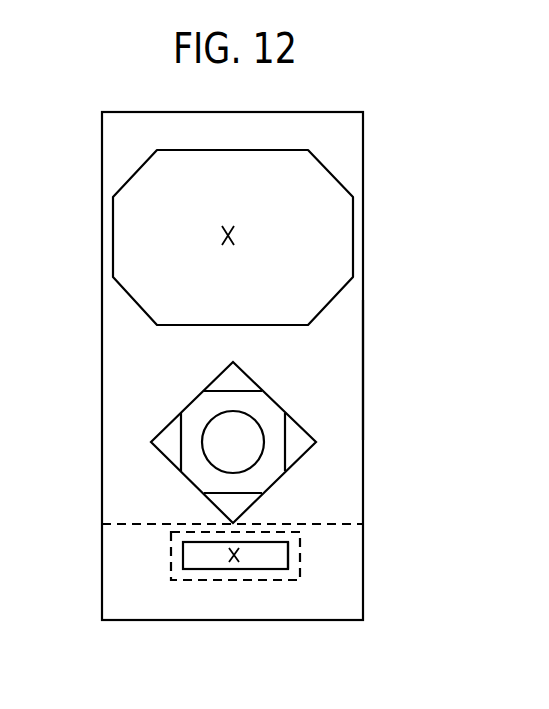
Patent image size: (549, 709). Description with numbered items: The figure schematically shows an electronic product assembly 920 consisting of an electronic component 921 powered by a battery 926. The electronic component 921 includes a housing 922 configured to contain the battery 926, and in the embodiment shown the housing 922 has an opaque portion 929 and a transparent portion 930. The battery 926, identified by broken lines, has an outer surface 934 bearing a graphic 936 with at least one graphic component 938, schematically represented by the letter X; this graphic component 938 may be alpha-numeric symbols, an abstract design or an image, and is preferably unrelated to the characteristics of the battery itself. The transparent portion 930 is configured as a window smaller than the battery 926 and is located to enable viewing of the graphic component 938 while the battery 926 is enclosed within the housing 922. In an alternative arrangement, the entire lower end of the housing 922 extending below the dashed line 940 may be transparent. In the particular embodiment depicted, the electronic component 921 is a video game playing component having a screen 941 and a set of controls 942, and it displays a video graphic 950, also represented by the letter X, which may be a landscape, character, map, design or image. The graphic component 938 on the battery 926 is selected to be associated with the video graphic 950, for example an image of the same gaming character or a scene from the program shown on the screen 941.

The electronic product assembly 920 is at (98, 84).
The electronic component 921 is at (373, 126).
The housing 922 is at (363, 372).
The battery 926 is at (273, 580).
The opaque portion 929 is at (345, 415).
The transparent portion 930 is at (197, 555).
The outer surface 934 is at (197, 575).
The graphic 936 is at (282, 555).
The graphic component 938 is at (242, 557).
The dashed line 940 is at (330, 523).
The screen 941 is at (340, 232).
The set of controls 942 is at (192, 403).
The video graphic 950 is at (222, 235).